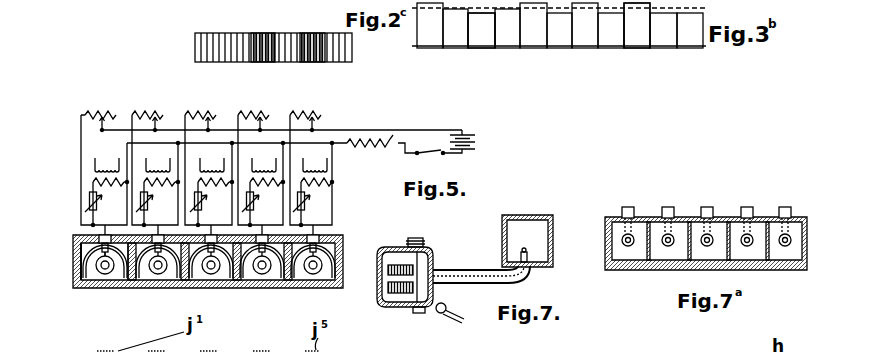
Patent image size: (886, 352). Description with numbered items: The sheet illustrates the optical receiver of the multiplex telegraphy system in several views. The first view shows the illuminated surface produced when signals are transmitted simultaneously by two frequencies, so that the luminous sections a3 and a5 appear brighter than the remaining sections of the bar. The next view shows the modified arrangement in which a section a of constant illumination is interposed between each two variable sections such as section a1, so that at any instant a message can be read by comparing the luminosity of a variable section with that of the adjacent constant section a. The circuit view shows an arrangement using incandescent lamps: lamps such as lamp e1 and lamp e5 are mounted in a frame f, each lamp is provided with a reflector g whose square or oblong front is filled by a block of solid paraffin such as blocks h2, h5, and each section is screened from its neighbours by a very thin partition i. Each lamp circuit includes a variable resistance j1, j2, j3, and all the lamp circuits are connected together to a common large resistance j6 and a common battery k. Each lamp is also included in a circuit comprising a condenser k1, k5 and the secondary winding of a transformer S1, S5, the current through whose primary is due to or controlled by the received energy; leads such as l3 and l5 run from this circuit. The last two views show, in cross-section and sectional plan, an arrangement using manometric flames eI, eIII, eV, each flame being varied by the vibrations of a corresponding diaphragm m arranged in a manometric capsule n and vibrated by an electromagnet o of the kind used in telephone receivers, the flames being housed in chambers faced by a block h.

In FIG. 2C, the luminous section a3 is at (250, 33).
In FIG. 2C, the luminous section a5 is at (304, 33).
In FIG. 3B, the luminous section a1 is at (460, 40).
In FIG. 3B, the section of constant illumination a is at (615, 40).
In FIG. 5, the variable resistance j1 is at (103, 113).
In FIG. 5, the variable resistance j2 is at (157, 113).
In FIG. 5, the variable resistance j3 is at (309, 113).
In FIG. 5, the common large resistance j6 is at (373, 139).
In FIG. 5, the common battery k is at (470, 134).
In FIG. 5, the transformer S1 is at (107, 157).
In FIG. 5, the transformer S5 is at (322, 182).
In FIG. 5, the condenser k1 is at (98, 203).
In FIG. 5, the condenser k5 is at (306, 200).
In FIG. 5, the lamp e5 is at (342, 254).
In FIG. 5, the reflector g is at (102, 268).
In FIG. 5, the block of solid paraffin h2 is at (154, 272).
In FIG. 5, the block of solid paraffin h5 is at (312, 282).
In FIG. 5, the frame f is at (80, 288).
In FIG. 5, the lamp e1 is at (112, 268).
In FIG. 7, the lamp e1 is at (525, 250).
In FIG. 5, the partition i is at (132, 286).
In FIG. 5, the lead wire l3 is at (166, 333).
In FIG. 5, the lead wire l5 is at (333, 338).
In FIG. 7, the diaphragm m is at (434, 257).
In FIG. 7, the electromagnet o is at (399, 294).
In FIG. 7, the manometric capsule n is at (443, 300).
In FIG. 7, the block of solid paraffin h is at (554, 219).
In FIG. 7A, the block of solid paraffin h is at (636, 264).
In FIG. 7A, the manometric flame eI is at (634, 233).
In FIG. 7A, the manometric flame eIII is at (712, 233).
In FIG. 7A, the manometric flame eV is at (792, 236).